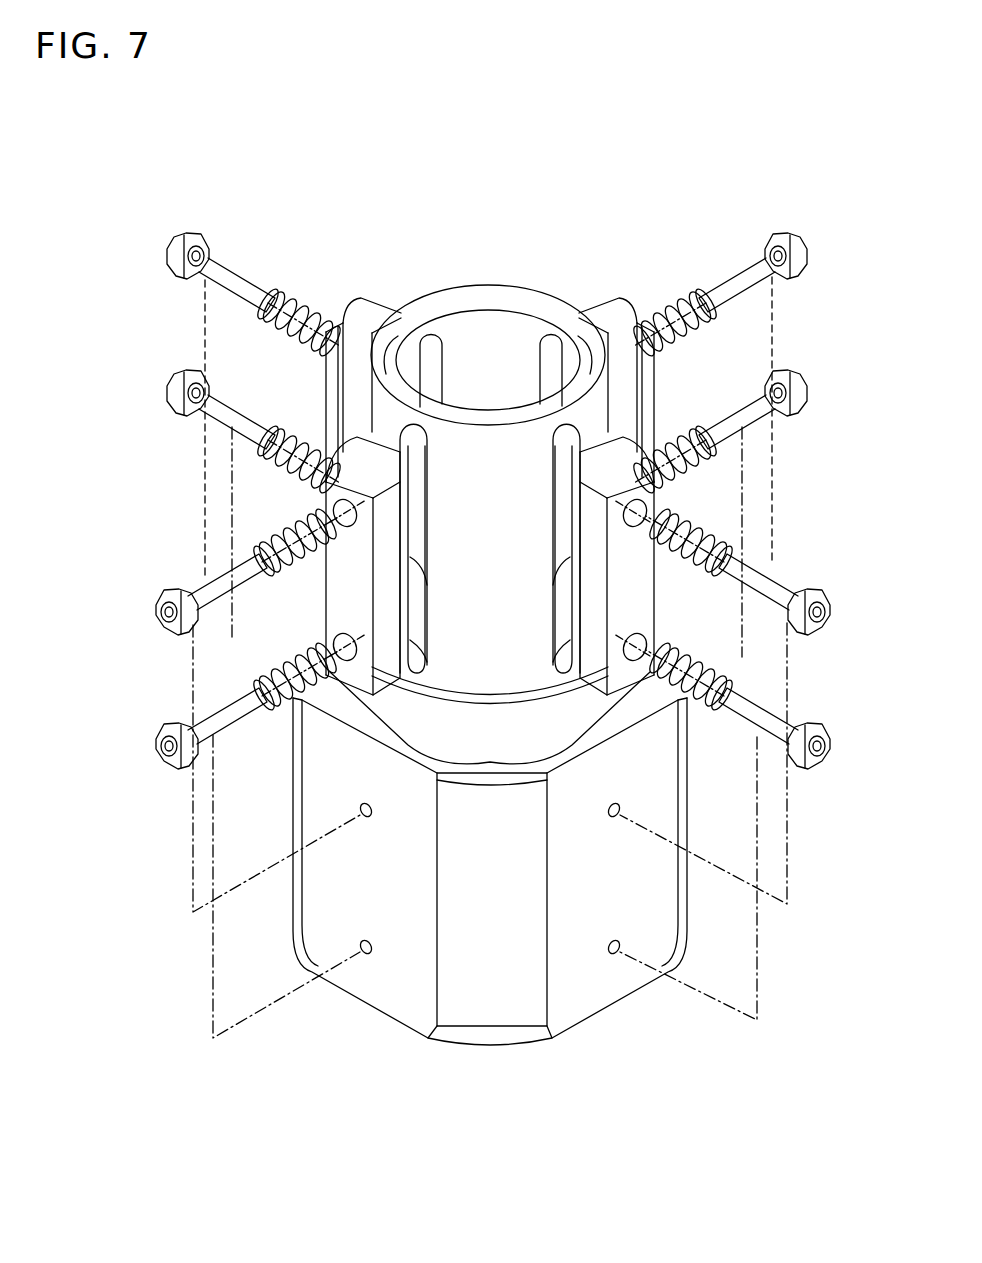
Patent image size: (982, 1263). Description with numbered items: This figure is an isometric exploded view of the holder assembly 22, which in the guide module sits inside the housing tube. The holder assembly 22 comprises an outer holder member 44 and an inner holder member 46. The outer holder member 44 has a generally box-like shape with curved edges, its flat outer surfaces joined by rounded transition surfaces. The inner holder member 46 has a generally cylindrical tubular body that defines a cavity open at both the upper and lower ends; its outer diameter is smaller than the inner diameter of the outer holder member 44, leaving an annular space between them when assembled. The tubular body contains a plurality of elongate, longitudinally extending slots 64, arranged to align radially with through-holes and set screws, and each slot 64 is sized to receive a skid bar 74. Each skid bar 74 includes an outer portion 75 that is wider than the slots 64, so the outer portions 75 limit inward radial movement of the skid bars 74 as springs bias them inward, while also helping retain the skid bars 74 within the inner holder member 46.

The holder assembly 22 is at (414, 276).
The outer holder member 44 is at (392, 968).
The inner holder member 46 is at (540, 305).
The slots 64 is at (422, 372).
The skid bar 74 is at (390, 540).
The outer portion 75 is at (650, 378).